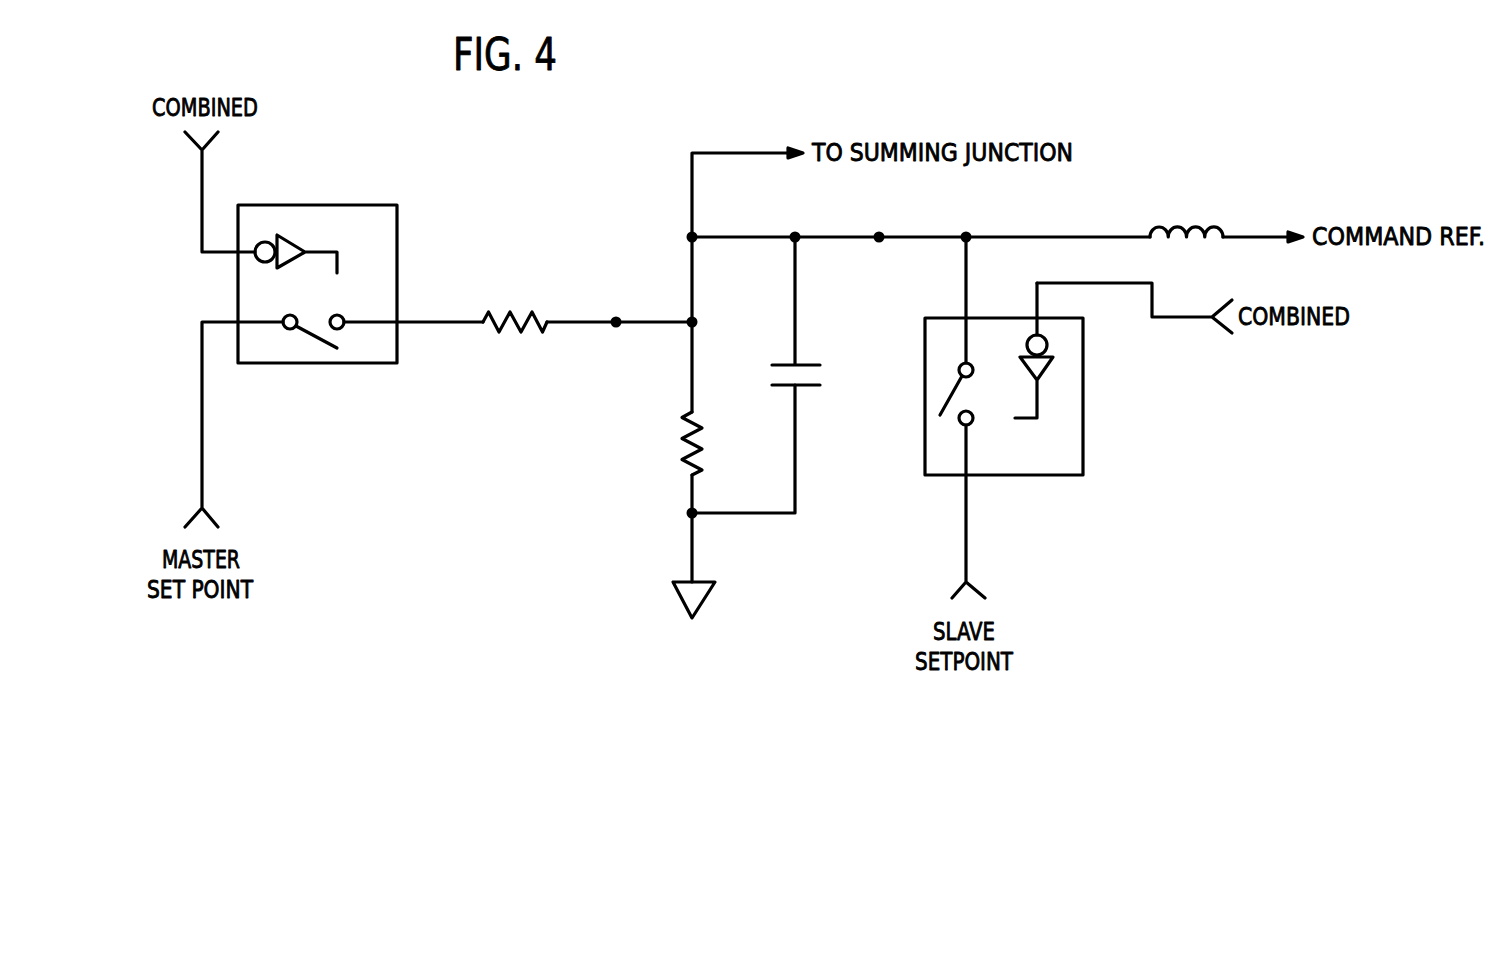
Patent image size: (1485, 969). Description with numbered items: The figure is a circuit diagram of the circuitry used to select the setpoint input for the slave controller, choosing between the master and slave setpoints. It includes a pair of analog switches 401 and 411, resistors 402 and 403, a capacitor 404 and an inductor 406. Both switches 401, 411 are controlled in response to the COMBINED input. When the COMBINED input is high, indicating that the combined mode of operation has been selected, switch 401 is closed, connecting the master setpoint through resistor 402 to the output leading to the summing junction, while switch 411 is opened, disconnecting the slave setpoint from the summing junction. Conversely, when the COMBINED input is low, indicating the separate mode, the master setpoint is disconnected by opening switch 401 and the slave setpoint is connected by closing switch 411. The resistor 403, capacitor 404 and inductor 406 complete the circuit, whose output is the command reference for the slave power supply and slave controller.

The analog switch 401 is at (357, 205).
The resistor 402 is at (512, 318).
The resistor 403 is at (687, 430).
The capacitor 404 is at (807, 363).
The inductor 406 is at (1200, 225).
The analog switch 411 is at (1083, 433).